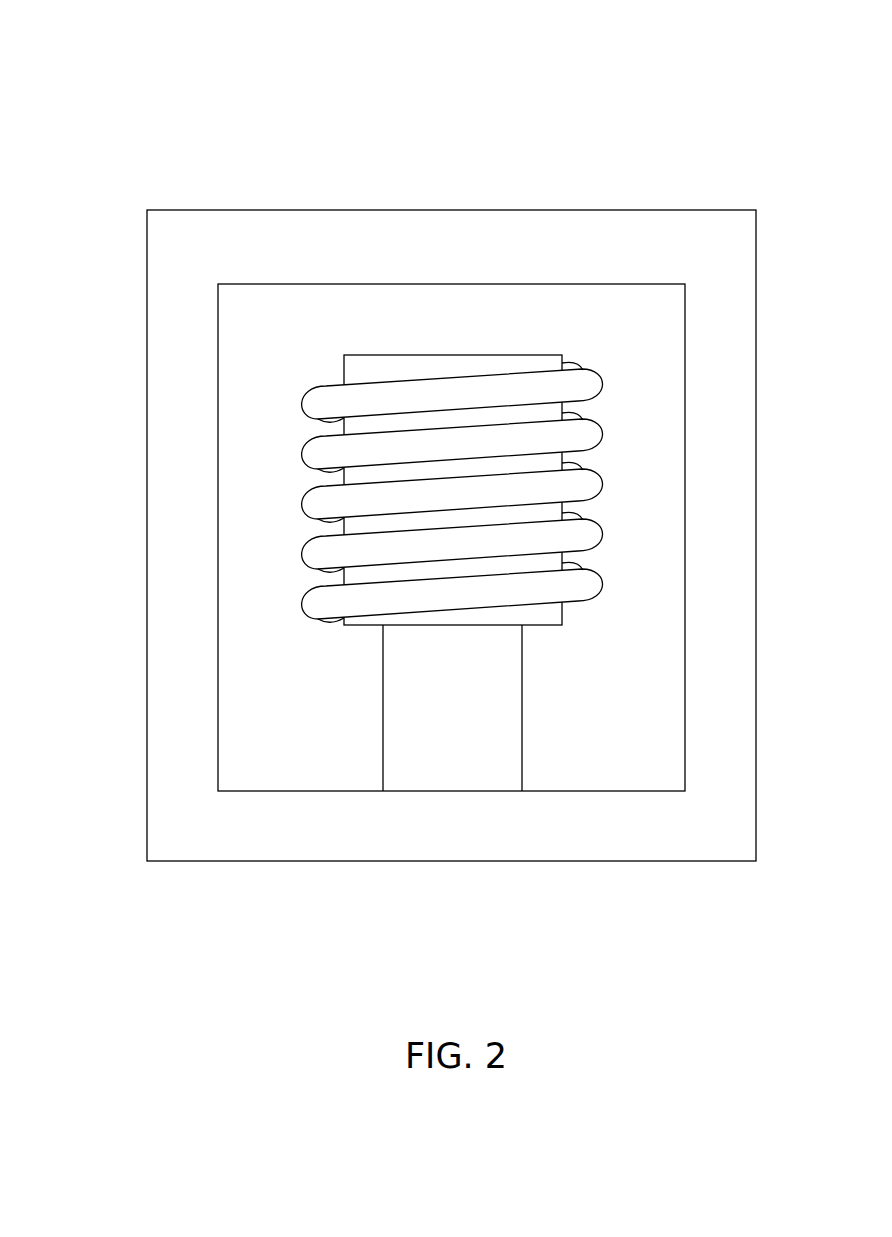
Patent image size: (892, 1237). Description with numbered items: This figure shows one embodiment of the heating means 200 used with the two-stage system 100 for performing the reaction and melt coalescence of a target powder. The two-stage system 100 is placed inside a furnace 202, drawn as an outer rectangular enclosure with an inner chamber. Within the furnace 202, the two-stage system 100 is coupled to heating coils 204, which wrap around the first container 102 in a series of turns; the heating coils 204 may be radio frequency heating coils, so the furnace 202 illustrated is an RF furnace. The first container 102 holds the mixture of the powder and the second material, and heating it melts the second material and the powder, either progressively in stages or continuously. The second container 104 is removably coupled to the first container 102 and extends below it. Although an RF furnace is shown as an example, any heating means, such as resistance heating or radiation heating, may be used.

The heating means 200 is at (141, 26).
The furnace 202 is at (683, 210).
The two-stage system 100 is at (455, 549).
The first container 102 is at (487, 484).
The second container 104 is at (522, 687).
The heating coils 204 is at (598, 376).